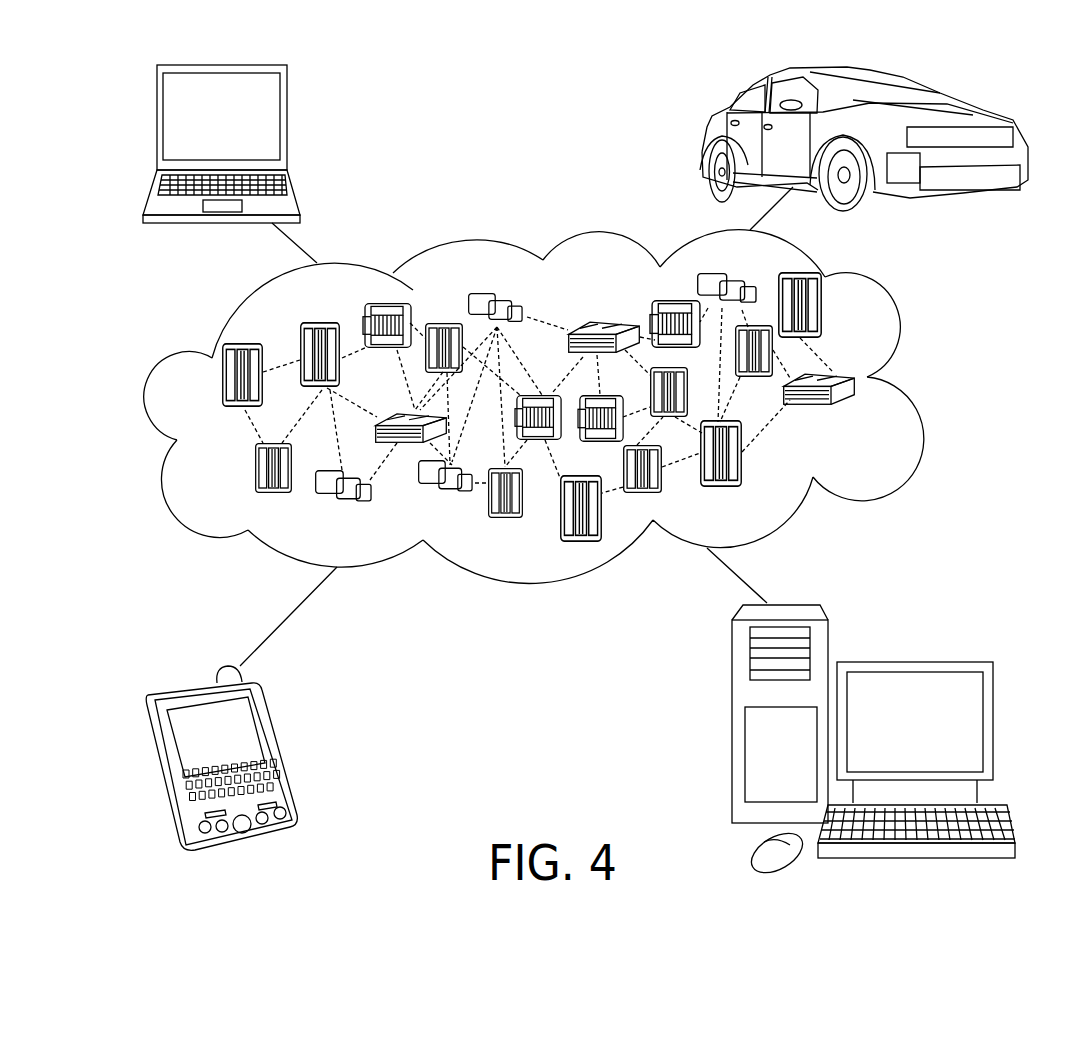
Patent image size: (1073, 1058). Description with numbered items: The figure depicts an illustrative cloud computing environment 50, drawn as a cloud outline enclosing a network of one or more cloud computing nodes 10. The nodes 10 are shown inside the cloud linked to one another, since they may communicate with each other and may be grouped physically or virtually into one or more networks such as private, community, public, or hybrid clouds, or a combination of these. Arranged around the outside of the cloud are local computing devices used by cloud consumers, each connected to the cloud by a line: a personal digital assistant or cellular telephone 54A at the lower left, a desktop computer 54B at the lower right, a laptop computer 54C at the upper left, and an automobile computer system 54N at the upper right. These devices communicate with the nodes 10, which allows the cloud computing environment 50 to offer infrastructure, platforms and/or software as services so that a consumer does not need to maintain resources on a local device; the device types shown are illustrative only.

The cloud computing nodes 10 is at (857, 413).
The cloud computing environment 50 is at (908, 384).
The personal digital assistant (PDA) or cellular telephone 54A is at (281, 750).
The desktop computer 54B is at (912, 662).
The laptop computer 54C is at (290, 127).
The automobile computer system 54N is at (700, 140).